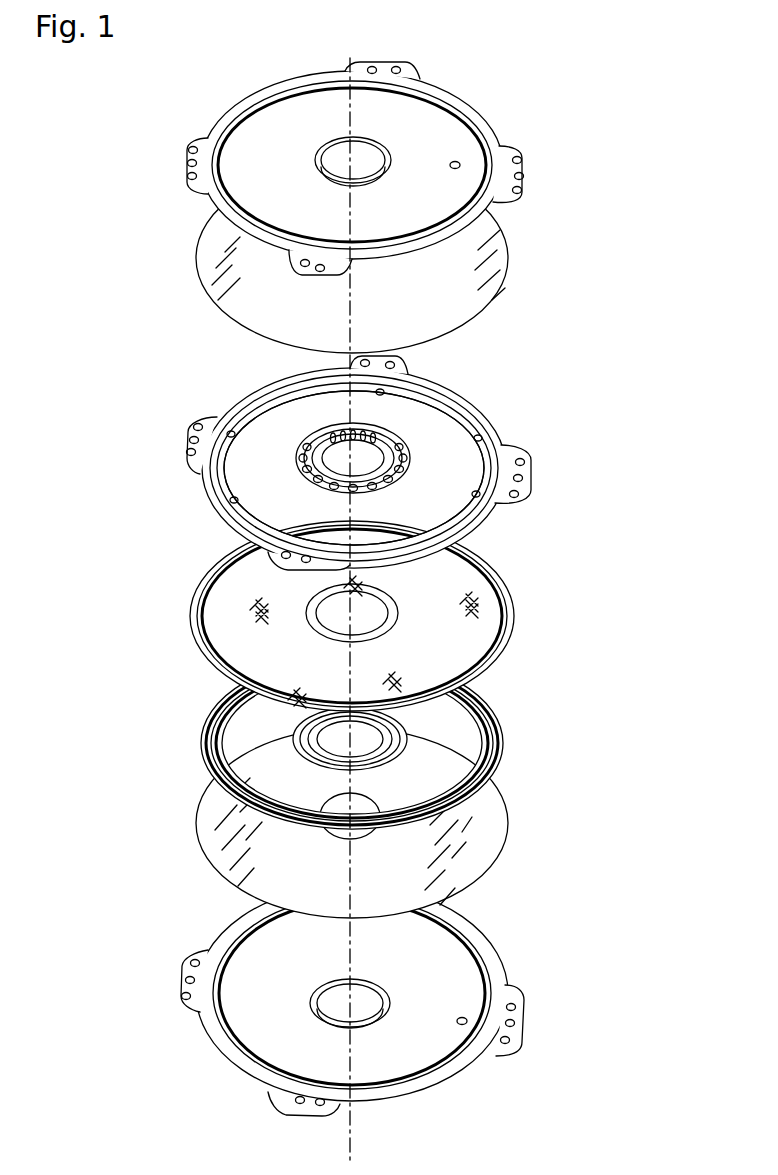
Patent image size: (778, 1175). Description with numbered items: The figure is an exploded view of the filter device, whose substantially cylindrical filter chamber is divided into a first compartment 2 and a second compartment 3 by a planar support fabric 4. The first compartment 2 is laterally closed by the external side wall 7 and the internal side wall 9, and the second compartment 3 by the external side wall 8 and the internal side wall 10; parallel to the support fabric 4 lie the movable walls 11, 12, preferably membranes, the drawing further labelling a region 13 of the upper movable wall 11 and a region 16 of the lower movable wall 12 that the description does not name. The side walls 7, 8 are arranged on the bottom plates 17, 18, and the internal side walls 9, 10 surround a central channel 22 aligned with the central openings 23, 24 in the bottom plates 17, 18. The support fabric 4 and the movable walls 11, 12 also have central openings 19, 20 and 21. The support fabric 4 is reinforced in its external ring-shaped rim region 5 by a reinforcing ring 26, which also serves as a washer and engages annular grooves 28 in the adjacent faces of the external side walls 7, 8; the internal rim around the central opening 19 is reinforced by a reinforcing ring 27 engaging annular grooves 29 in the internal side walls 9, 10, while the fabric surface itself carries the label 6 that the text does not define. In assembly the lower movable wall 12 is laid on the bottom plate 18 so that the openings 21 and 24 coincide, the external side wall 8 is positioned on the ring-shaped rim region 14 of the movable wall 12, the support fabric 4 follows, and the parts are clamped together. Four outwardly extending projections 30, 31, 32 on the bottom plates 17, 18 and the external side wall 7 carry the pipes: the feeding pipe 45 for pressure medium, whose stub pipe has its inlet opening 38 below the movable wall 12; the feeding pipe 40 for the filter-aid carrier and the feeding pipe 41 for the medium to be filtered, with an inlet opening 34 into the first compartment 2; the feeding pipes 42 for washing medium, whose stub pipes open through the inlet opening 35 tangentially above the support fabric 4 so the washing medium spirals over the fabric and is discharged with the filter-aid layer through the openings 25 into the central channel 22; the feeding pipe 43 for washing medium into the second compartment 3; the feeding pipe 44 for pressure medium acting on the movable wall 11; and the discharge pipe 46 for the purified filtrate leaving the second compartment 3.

The first compartment 2 is at (361, 532).
The second compartment 3 is at (340, 747).
The support fabric 4 is at (455, 640).
The external ring-shaped rim region 5 is at (370, 616).
The disc surface 6 is at (300, 636).
The external side wall 7 is at (218, 490).
The external side wall 8 is at (240, 792).
The internal side wall 9 is at (487, 414).
The internal side wall 10 is at (420, 737).
The movable wall 11 is at (403, 258).
The movable wall 12 is at (353, 823).
The upper diaphragm layer 13 is at (505, 247).
The ring-shaped rim region 14 is at (497, 843).
The central boss 16 is at (314, 829).
The bottom plate 17 is at (359, 183).
The bottom plate 18 is at (368, 1000).
The central opening 19 is at (335, 616).
The central opening 20 is at (375, 279).
The central opening 21 is at (375, 838).
The central channel 22 is at (310, 473).
The central opening 23 is at (349, 158).
The central opening 24 is at (335, 1008).
The openings 25 is at (300, 455).
The reinforcing ring 26 is at (505, 607).
The reinforcing ring 27 is at (393, 608).
The annular grooves 28 is at (293, 752).
The annular grooves 29 is at (330, 738).
The projections 30 is at (187, 153).
The projections 31 is at (200, 950).
The projections 32 is at (190, 434).
The inlet opening 34 is at (229, 431).
The inlet opening 35 is at (504, 432).
The inlet opening 38 is at (460, 163).
The feeding pipe 40 is at (524, 192).
The feeding pipe 41 is at (190, 146).
The feeding pipe 42 is at (372, 66).
The feeding pipe 43 is at (300, 263).
The feeding pipe 44 is at (188, 163).
The feeding pipe 45 is at (526, 176).
The discharge pipe 46 is at (400, 67).